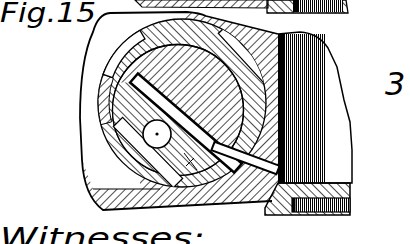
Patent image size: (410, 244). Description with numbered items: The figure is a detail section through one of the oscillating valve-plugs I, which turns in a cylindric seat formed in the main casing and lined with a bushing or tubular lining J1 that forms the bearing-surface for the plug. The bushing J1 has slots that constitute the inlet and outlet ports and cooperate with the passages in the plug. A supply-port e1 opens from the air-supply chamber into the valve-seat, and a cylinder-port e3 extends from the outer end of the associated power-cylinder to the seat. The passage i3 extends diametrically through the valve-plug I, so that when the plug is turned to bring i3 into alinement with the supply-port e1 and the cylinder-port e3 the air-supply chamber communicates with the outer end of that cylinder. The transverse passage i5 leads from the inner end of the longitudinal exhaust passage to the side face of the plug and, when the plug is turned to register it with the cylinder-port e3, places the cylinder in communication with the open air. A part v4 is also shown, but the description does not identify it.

The supply port e1 is at (120, 48).
The supply passage i3 is at (128, 100).
The pivot pin hole v4 is at (157, 134).
The transverse exhaust passage i5 is at (147, 177).
The bushing J1 is at (288, 55).
The valve-plug I is at (262, 100).
The cylinder port e3 is at (280, 168).